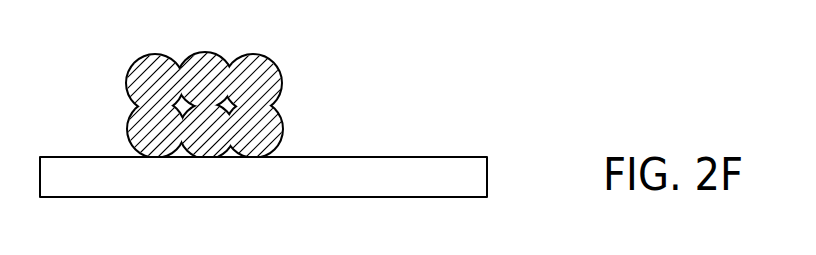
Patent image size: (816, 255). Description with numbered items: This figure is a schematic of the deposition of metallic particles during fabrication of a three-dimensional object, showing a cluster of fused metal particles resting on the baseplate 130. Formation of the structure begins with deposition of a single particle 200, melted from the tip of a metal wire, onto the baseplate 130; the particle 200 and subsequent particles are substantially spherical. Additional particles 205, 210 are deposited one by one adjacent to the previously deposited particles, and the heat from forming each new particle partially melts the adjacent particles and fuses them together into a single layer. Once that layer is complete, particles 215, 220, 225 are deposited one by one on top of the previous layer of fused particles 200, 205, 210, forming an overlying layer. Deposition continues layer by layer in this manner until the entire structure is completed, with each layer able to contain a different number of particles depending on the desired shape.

The baseplate 130 is at (482, 173).
The particle 200 is at (128, 117).
The particle 205 is at (184, 156).
The particle 210 is at (280, 109).
The particle 215 is at (128, 80).
The particle 220 is at (201, 55).
The particle 225 is at (280, 72).